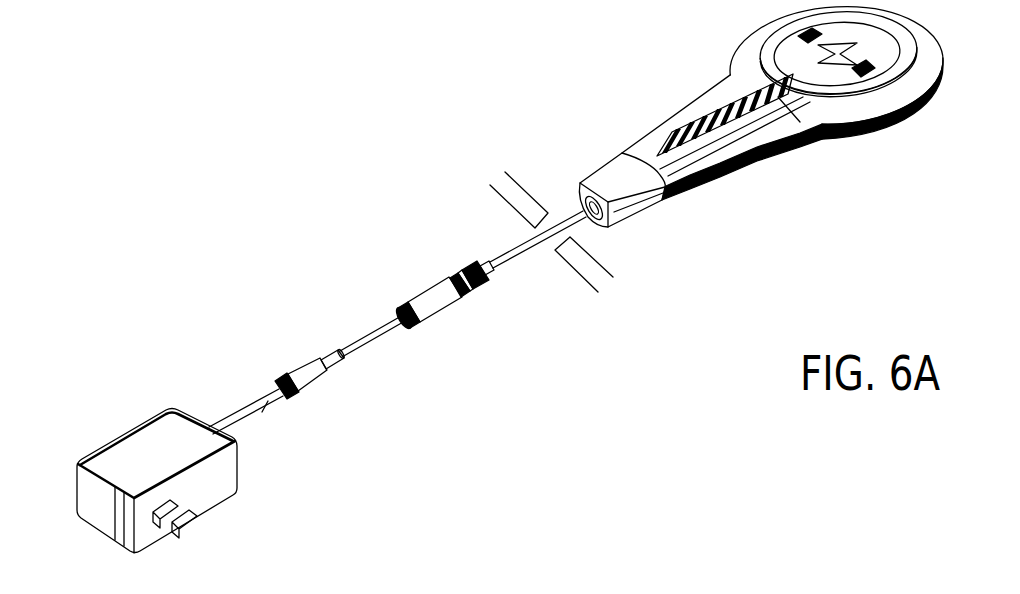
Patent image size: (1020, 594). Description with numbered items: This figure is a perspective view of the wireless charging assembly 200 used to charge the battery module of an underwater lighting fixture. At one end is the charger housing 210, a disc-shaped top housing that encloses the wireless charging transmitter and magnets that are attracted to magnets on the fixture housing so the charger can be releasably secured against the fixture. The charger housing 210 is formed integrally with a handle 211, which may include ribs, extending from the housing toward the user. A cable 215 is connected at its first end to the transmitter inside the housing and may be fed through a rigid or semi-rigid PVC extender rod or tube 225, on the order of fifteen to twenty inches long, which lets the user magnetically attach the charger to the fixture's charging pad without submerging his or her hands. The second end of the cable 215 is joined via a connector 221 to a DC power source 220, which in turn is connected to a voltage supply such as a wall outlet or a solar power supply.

The wireless charging assembly 200 is at (510, 63).
The charger housing 210 is at (807, 70).
The handle 211 is at (677, 138).
The extender rod or tube 225 is at (573, 215).
The cable 215 is at (487, 270).
The connector 221 is at (397, 322).
The DC power source 220 is at (157, 450).